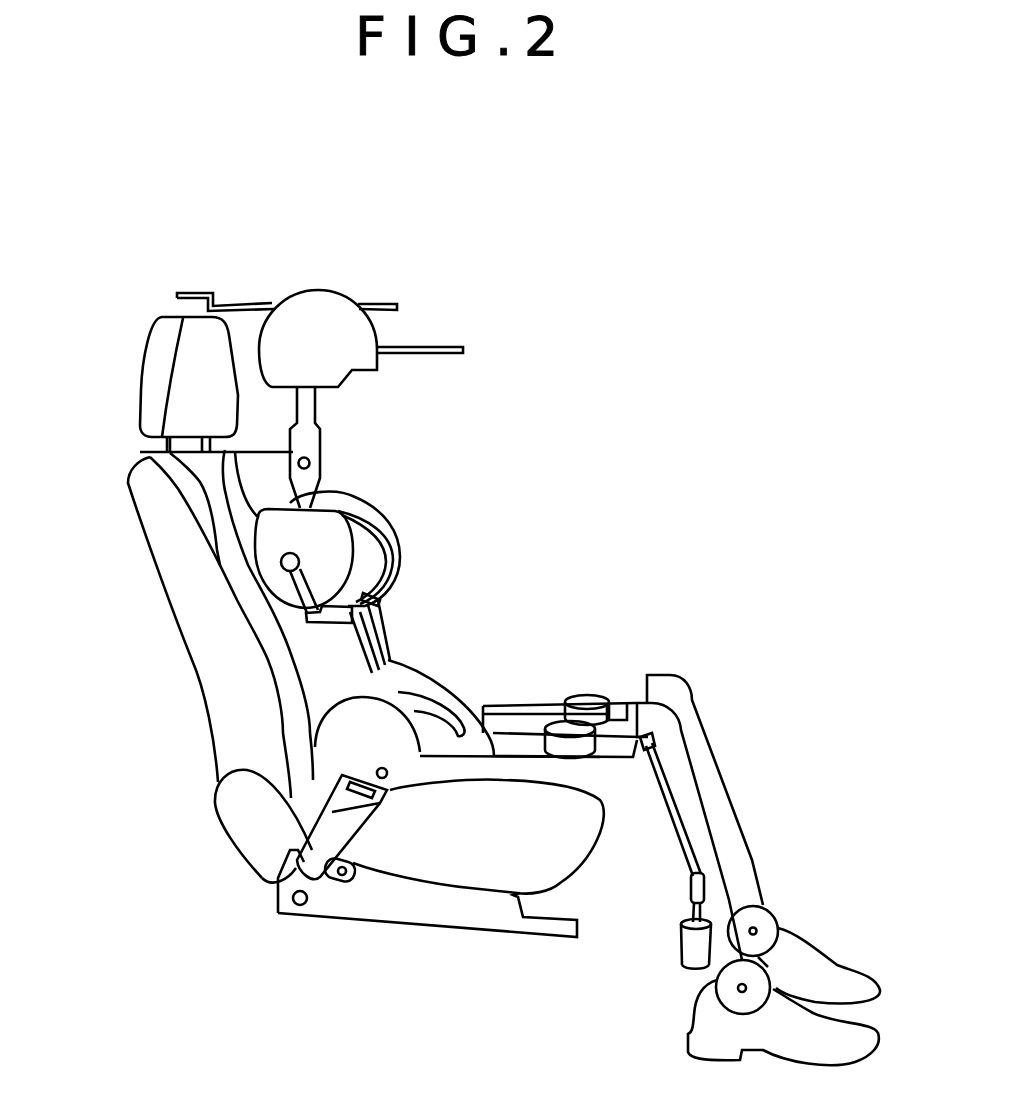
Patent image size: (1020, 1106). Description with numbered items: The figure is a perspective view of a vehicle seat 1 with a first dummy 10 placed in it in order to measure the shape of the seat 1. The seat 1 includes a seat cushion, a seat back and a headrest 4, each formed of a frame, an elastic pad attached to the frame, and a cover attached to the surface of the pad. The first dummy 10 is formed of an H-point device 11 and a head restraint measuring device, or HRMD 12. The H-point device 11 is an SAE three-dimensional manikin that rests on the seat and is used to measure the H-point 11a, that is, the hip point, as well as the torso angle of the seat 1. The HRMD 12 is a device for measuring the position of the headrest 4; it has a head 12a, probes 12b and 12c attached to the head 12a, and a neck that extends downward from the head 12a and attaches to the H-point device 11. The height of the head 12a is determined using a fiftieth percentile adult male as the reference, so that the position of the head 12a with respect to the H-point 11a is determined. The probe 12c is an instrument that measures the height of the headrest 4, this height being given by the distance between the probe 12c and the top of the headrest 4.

The seat 1 is at (127, 467).
The headrest 4 is at (147, 347).
The first dummy 10 is at (413, 496).
The H-point device 11 is at (401, 558).
The H-point 11a is at (387, 778).
The head restraint measuring device (HRMD) 12 is at (372, 380).
The head 12a is at (301, 323).
The probe 12b is at (433, 343).
The probe 12c is at (378, 298).